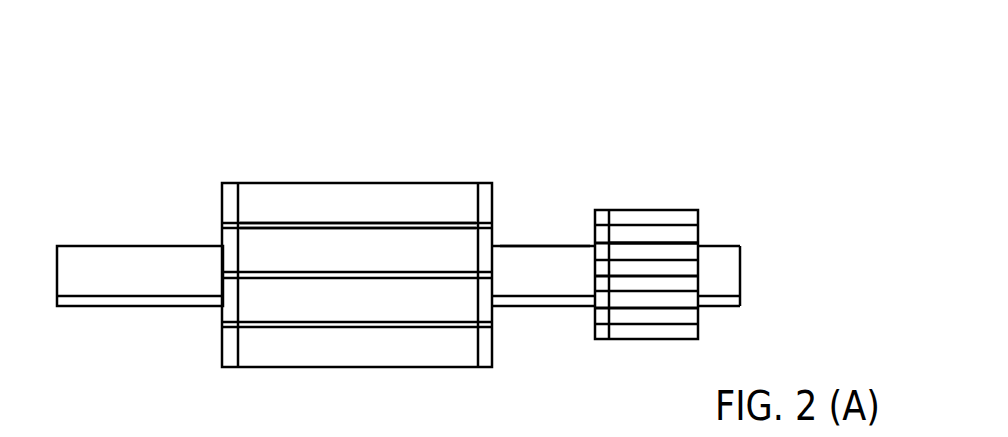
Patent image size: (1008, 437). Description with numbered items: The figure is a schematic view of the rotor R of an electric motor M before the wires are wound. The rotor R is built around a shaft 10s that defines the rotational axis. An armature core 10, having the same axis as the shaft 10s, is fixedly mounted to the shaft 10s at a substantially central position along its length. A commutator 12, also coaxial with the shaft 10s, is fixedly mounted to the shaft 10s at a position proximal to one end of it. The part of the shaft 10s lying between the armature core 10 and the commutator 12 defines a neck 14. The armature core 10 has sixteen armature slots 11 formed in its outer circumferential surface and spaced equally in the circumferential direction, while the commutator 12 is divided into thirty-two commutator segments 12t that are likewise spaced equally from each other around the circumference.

The armature core 10 is at (446, 171).
The shaft 10s is at (133, 265).
The armature slots 11 is at (305, 231).
The commutator 12 is at (665, 203).
The commutator segments 12t is at (688, 233).
The neck 14 is at (546, 239).
The rotor R is at (548, 127).
The electric motor M is at (656, 110).